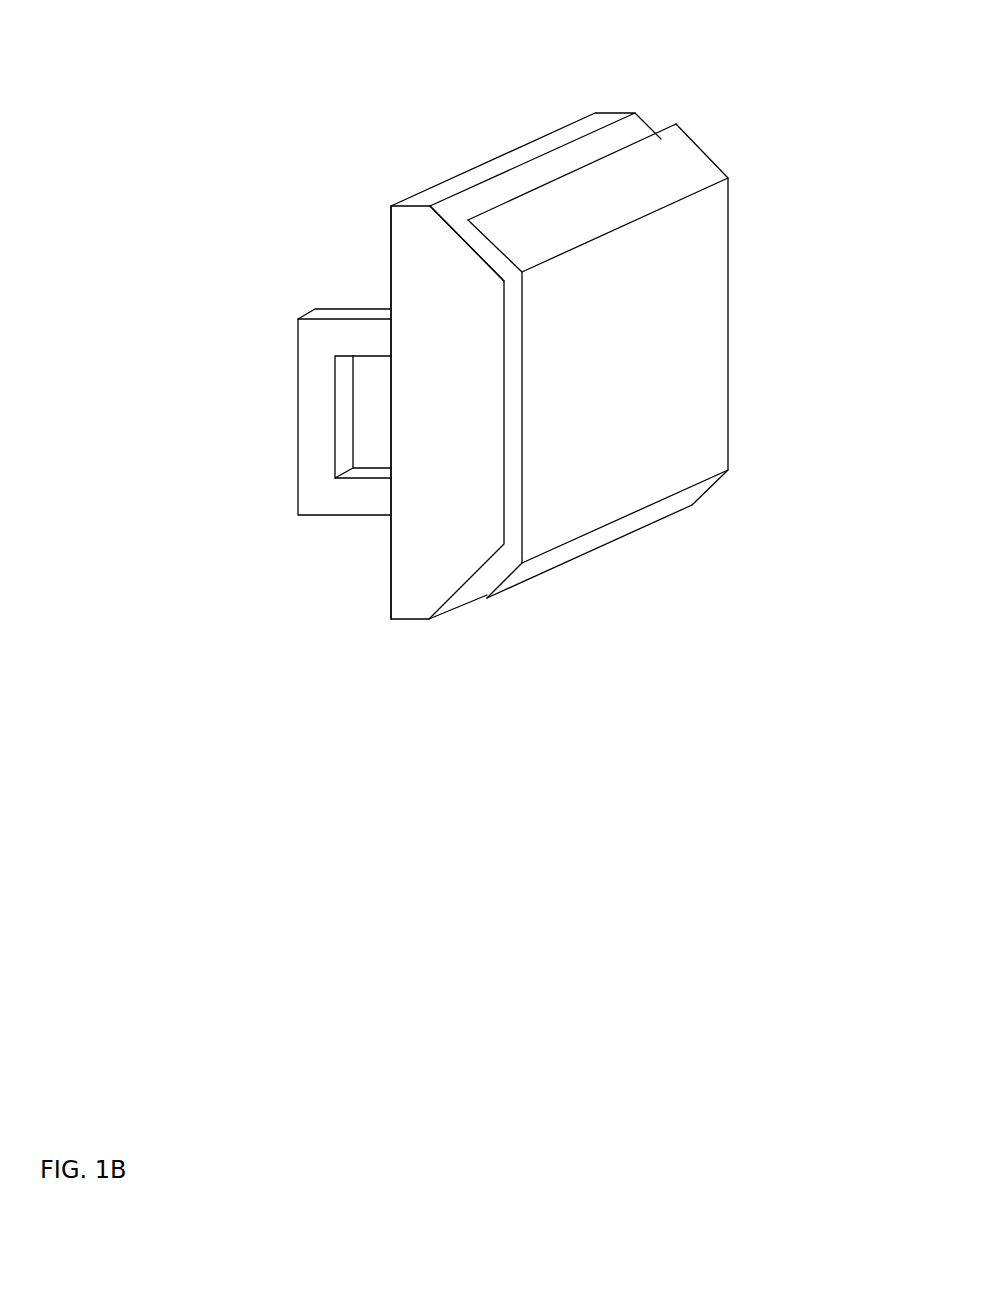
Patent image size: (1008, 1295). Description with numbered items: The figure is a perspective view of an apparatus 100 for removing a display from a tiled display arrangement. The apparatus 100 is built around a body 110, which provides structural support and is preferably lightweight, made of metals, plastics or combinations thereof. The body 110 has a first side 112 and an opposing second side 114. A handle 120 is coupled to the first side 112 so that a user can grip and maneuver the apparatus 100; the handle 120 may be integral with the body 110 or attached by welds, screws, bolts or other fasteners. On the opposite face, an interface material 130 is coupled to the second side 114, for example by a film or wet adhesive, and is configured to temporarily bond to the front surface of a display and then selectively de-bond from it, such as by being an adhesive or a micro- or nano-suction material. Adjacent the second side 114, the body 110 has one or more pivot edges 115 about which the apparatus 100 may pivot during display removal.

The apparatus 100 is at (285, 102).
The body 110 is at (410, 245).
The first side 112 is at (503, 525).
The second side 114 is at (391, 262).
The pivot edge 115 is at (492, 268).
The handle 120 is at (317, 357).
The interface material 130 is at (672, 320).